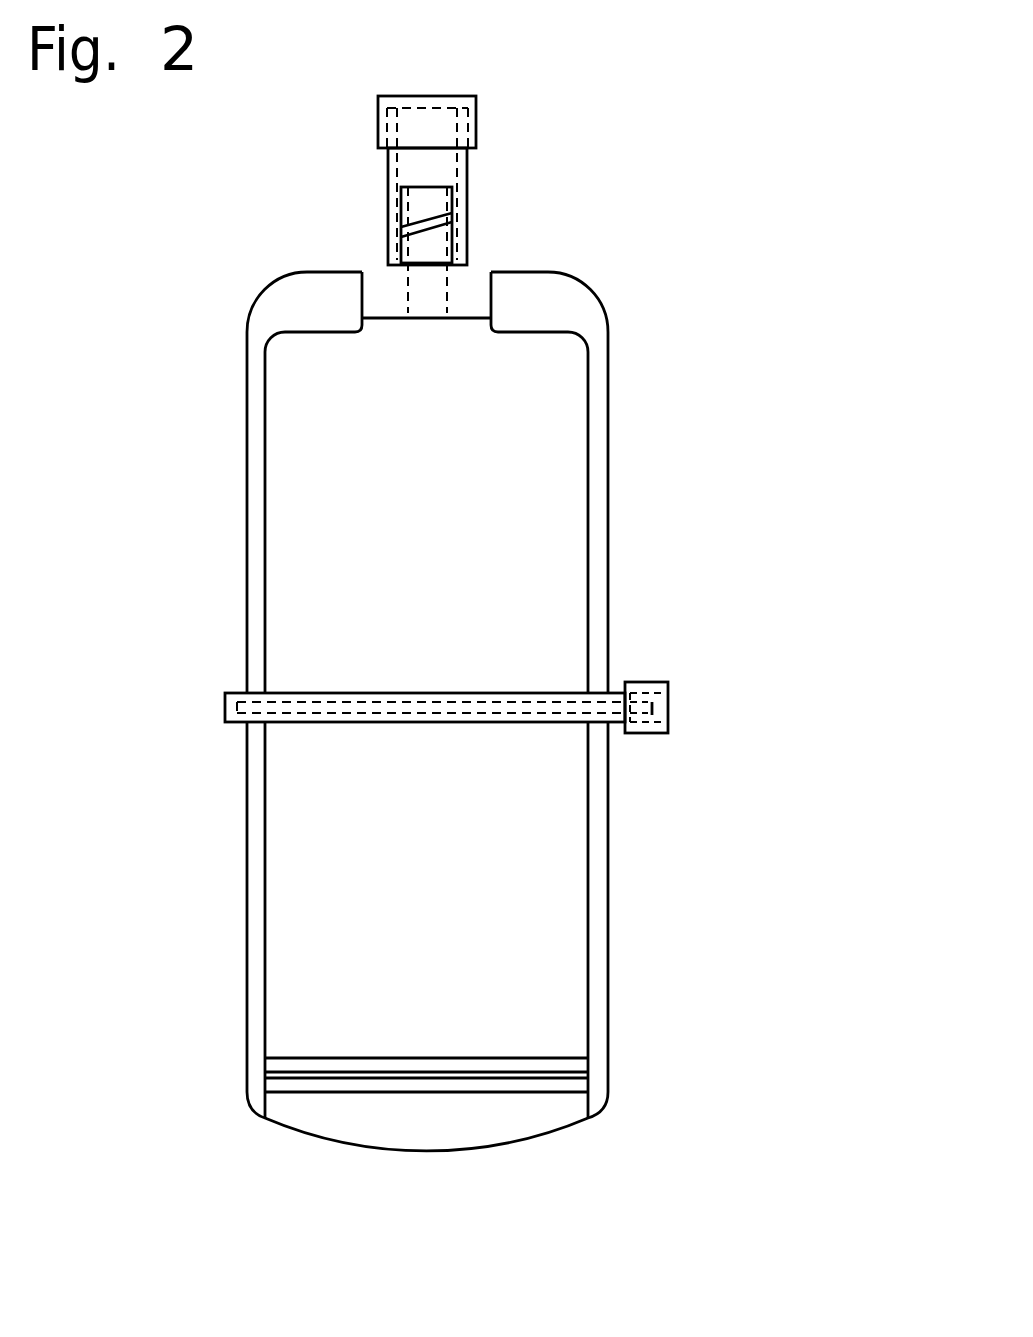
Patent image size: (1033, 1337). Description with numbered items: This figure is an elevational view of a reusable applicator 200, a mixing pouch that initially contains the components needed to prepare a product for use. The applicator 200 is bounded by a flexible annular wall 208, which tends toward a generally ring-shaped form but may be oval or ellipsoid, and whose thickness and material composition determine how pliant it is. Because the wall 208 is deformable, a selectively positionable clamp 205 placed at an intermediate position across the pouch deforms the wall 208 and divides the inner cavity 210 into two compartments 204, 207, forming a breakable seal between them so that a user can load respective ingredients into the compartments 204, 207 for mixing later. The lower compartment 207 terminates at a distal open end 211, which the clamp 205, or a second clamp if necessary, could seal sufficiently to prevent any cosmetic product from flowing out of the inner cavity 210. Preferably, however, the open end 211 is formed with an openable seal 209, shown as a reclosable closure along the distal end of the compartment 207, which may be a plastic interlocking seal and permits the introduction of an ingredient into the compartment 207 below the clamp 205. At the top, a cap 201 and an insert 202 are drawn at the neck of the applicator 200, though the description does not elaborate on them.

The reusable applicator 200 is at (685, 195).
The cap 201 is at (476, 108).
The neck insert 202 is at (472, 233).
The compartment 204 is at (495, 522).
The clamp 205 is at (237, 700).
The compartment 207 is at (498, 817).
The flexible annular wall 208 is at (608, 468).
The openable seal 209 is at (518, 1058).
The inner cavity 210 is at (328, 463).
The distal open end 211 is at (437, 1147).